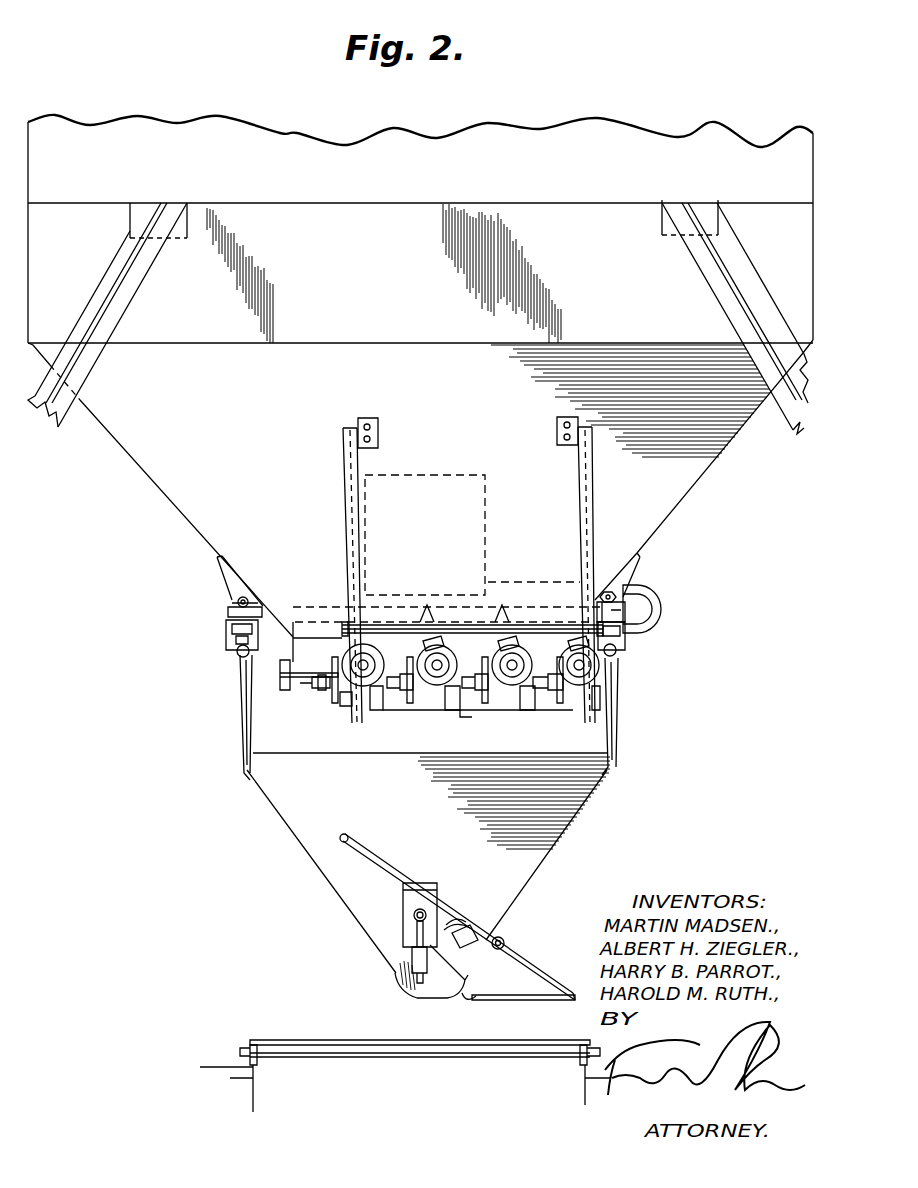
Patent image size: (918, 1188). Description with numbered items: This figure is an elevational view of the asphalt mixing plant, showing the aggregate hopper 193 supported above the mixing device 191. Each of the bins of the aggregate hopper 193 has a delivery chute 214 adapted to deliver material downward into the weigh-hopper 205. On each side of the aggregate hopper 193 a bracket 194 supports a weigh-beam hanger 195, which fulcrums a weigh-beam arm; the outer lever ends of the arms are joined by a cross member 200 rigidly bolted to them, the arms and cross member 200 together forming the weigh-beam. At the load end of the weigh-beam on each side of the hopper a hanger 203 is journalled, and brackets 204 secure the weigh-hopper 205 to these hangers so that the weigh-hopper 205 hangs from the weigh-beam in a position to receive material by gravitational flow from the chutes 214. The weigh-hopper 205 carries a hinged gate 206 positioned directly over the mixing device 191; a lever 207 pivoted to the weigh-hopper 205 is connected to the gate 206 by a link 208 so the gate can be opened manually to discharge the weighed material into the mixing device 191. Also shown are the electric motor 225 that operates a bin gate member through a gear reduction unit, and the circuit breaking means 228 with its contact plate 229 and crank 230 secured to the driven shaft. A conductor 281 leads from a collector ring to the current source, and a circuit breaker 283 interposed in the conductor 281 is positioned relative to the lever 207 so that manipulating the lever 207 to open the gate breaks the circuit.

The mixing device 191 is at (300, 1088).
The aggregate hopper 193 is at (173, 462).
The bracket 194 is at (222, 575).
The weigh-beam hanger 195 is at (228, 608).
The cross member 200 is at (263, 613).
The hanger 203 is at (228, 638).
The brackets 204 is at (240, 708).
The weigh-hopper 205 is at (345, 882).
The hinged gate 206 is at (400, 987).
The lever 207 is at (390, 867).
The link 208 is at (530, 1001).
The delivery chute 214 is at (335, 664).
The electric motor 225 is at (370, 685).
The circuit breaking means 228 is at (345, 708).
The contact plate 229 is at (333, 703).
The crank 230 is at (326, 690).
The conductor 281 is at (450, 922).
The circuit breaker 283 is at (470, 934).